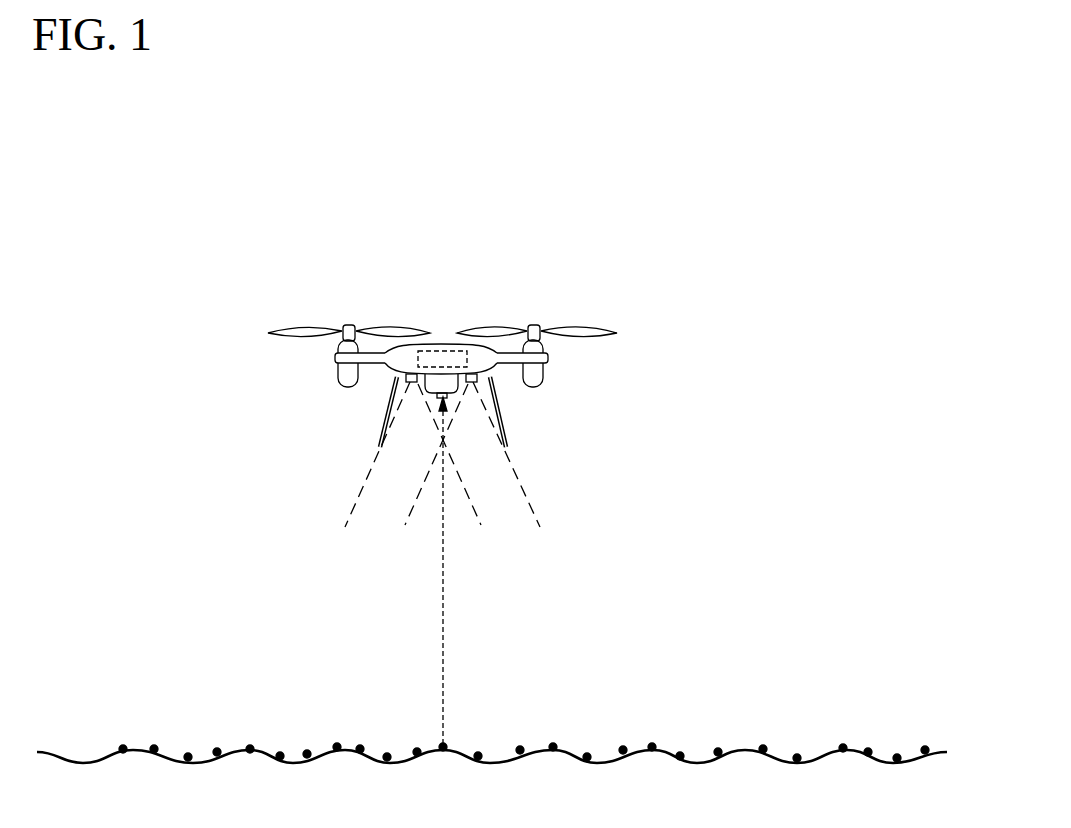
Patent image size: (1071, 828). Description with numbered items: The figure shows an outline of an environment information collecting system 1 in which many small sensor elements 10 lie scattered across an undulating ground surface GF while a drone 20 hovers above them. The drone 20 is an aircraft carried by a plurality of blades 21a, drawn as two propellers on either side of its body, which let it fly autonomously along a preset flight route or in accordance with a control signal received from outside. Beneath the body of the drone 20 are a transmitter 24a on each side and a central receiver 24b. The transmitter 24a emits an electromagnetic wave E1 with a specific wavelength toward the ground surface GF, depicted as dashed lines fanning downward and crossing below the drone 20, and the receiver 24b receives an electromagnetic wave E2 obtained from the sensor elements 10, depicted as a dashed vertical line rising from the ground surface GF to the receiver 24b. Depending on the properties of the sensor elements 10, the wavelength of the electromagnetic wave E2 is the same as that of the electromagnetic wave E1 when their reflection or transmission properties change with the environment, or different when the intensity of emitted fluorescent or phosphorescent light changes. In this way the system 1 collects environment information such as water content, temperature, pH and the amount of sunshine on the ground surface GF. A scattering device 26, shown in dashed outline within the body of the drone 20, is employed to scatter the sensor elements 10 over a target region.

The environment information collecting system 1 is at (691, 244).
The drone 20 is at (443, 308).
The blades 21a is at (315, 327).
The scattering device 26 is at (446, 351).
The transmitter 24a is at (405, 378).
The receiver 24b is at (440, 392).
The electromagnetic wave E1 is at (379, 492).
The electromagnetic wave E2 is at (443, 620).
The ground surface GF is at (47, 752).
The sensor elements 10 is at (154, 745).